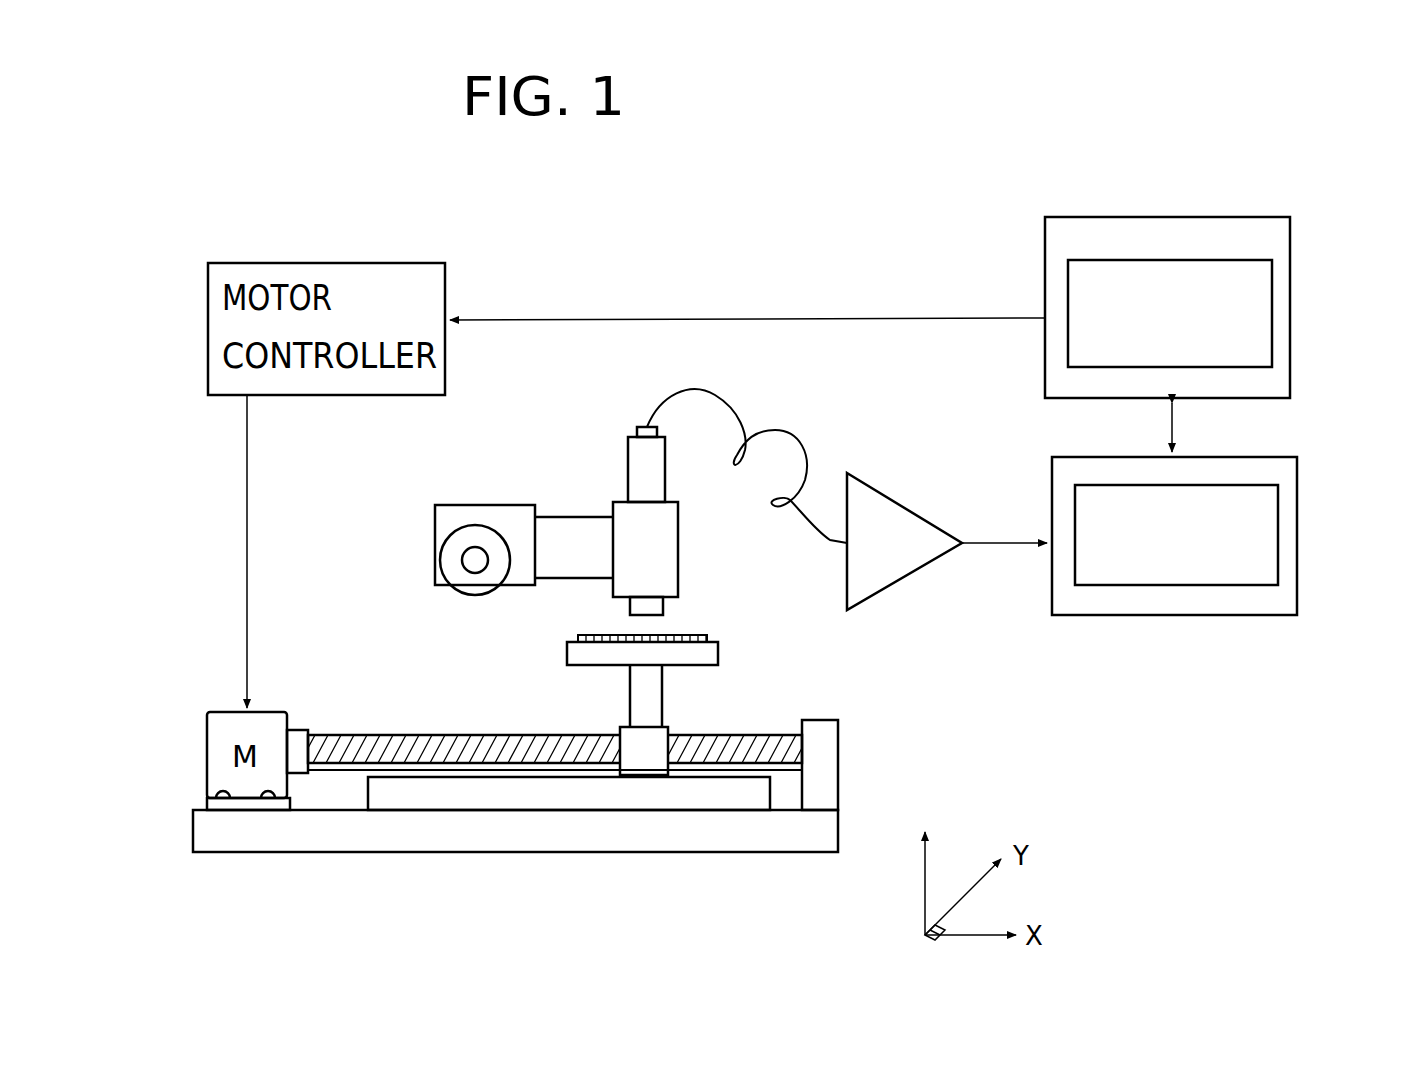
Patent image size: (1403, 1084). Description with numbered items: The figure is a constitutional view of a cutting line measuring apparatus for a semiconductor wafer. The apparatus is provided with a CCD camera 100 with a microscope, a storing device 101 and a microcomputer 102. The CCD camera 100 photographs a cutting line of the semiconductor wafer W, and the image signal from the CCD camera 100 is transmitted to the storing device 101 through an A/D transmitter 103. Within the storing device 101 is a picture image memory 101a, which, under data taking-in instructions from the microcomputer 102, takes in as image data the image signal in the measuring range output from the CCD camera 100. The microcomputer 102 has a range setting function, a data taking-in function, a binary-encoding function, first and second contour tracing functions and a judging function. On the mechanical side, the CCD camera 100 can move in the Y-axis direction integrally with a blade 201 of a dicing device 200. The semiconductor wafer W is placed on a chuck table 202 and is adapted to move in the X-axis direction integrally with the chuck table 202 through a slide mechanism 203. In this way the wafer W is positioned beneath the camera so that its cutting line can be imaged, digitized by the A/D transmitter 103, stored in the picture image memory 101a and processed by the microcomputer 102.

The CCD camera 100 is at (628, 456).
The storing device 101 is at (1297, 507).
The picture image memory 101a is at (1272, 573).
The microcomputer 102 is at (1290, 332).
The A/D transmitter 103 is at (913, 522).
The dicing device 200 is at (372, 858).
The blade 201 is at (462, 580).
The chuck table 202 is at (718, 655).
The slide mechanism 203 is at (410, 730).
The semiconductor wafer W is at (707, 635).